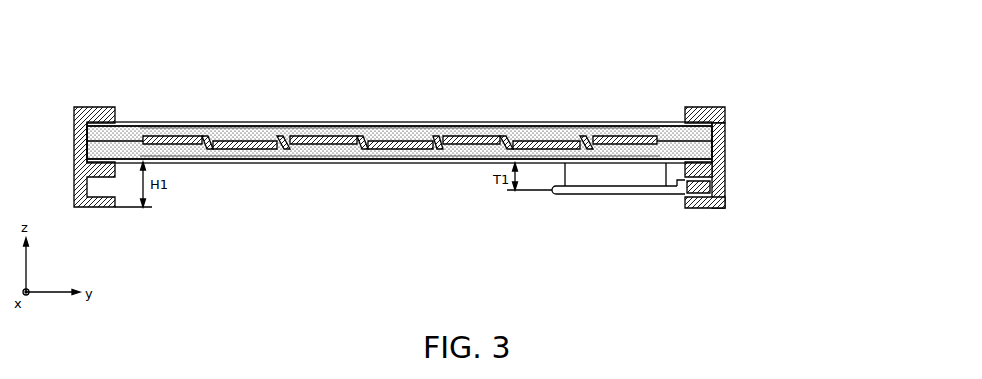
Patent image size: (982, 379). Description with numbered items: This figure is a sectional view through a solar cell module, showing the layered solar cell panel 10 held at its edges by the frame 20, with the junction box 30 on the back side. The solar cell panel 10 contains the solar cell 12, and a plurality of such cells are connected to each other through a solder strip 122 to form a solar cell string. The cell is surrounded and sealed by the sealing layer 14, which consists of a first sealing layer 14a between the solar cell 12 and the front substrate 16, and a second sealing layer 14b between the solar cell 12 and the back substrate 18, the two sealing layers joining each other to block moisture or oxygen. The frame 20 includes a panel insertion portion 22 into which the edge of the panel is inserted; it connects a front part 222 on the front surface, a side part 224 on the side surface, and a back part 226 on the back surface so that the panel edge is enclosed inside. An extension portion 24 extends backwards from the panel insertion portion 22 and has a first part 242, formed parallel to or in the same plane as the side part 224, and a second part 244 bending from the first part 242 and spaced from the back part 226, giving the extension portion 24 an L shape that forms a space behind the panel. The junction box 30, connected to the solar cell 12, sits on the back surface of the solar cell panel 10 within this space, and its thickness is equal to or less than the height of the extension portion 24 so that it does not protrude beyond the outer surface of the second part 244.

The solar cell panel 10 is at (399, 96).
The solar cell 12 is at (393, 137).
The solder strip 122 is at (322, 140).
The sealing layer 14 is at (400, 107).
The first sealing layer 14a is at (447, 126).
The second sealing layer 14b is at (310, 75).
The front substrate 16 is at (359, 122).
The back substrate 18 is at (534, 160).
The frame 20 is at (489, 164).
The panel insertion portion 22 is at (776, 156).
The front part 222 is at (722, 110).
The side part 224 is at (722, 135).
The back part 226 is at (722, 163).
The extension portion 24 is at (776, 200).
The first part 242 is at (722, 180).
The second part 244 is at (722, 206).
The junction box 30 is at (582, 201).